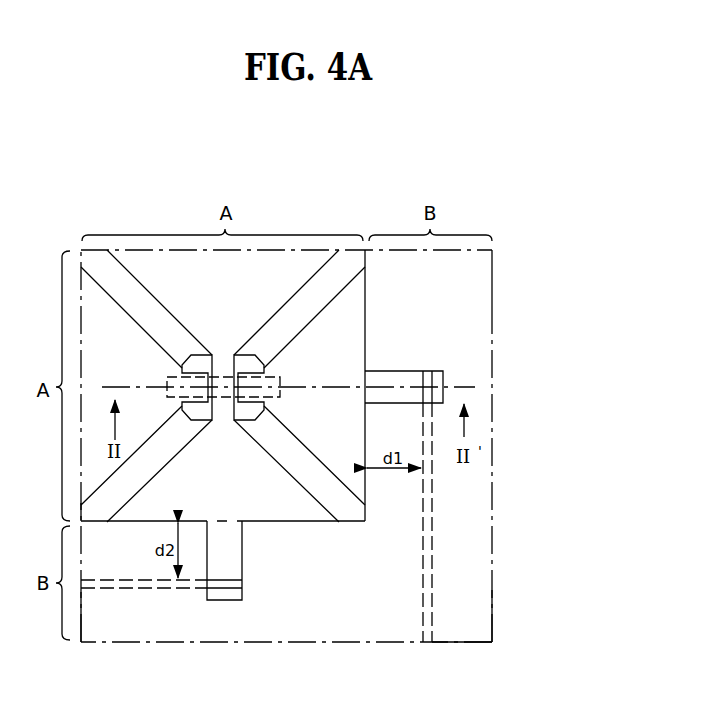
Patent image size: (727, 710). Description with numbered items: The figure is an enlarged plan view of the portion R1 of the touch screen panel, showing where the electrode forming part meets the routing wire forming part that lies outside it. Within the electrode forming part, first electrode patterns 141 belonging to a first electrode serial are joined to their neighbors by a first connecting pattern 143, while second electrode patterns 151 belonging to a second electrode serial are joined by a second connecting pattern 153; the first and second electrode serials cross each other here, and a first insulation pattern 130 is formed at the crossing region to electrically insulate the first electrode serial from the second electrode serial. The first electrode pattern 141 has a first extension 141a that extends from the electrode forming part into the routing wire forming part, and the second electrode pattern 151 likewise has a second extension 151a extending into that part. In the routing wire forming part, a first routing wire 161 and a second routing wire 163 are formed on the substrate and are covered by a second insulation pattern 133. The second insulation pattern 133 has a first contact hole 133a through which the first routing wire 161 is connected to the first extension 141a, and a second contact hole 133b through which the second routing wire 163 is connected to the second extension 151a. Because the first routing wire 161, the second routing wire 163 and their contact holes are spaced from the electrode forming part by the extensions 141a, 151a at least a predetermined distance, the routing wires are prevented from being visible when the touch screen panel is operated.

The portion R1 is at (69, 235).
The second insulation pattern 133 is at (472, 277).
The first contact hole 133a is at (428, 378).
The second contact hole 133b is at (222, 585).
The first electrode pattern 141 is at (138, 366).
The first extension 141a is at (415, 378).
The second electrode pattern 151 is at (210, 304).
The second extension 151a is at (232, 548).
The second connecting pattern 153 is at (223, 366).
The first routing wire 161 is at (428, 537).
The second routing wire 163 is at (140, 585).
The first insulation pattern 130 is at (250, 410).
The first connecting pattern 143 is at (280, 397).